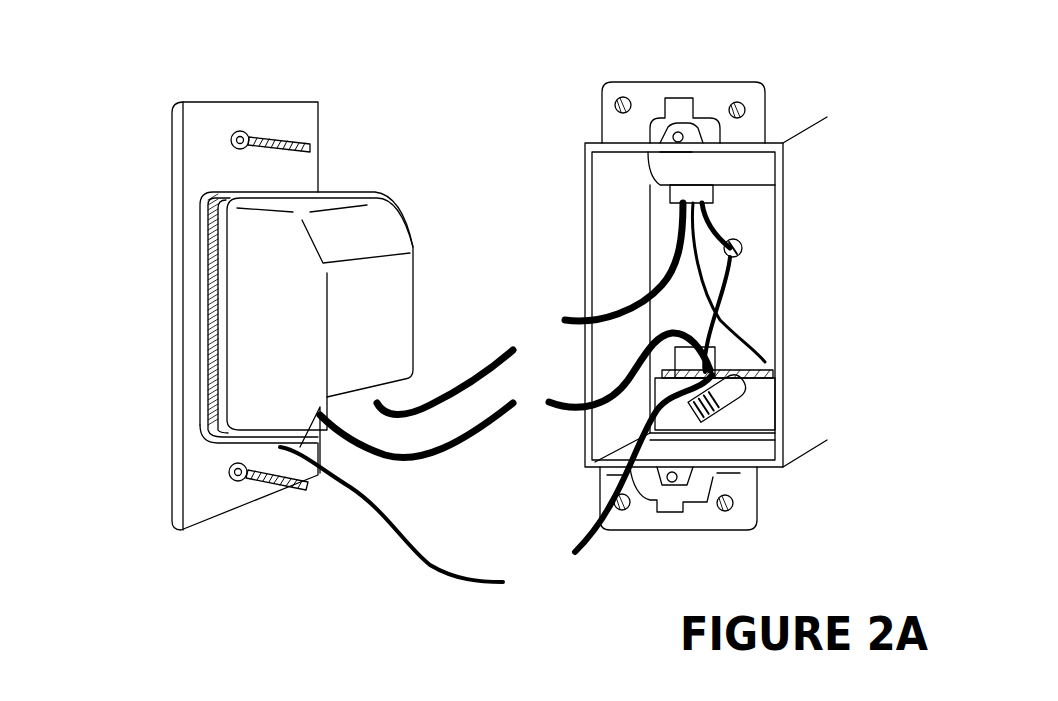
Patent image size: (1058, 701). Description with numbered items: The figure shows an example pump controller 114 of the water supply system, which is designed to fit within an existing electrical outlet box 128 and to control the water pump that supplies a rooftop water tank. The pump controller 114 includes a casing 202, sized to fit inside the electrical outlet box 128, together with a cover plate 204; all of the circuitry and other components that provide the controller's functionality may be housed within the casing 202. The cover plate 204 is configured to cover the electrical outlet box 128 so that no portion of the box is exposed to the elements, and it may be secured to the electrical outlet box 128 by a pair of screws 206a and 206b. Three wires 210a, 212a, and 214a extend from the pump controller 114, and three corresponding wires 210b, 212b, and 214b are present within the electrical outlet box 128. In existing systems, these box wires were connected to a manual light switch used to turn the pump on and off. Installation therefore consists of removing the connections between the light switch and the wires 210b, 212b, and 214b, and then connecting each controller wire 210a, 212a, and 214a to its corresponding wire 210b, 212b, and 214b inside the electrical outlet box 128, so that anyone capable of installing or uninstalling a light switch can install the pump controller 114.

The pump controller 114 is at (160, 277).
The casing 202 is at (368, 239).
The cover plate 204 is at (207, 135).
The screw 206a is at (277, 142).
The screw 206b is at (258, 488).
The wire 210a is at (477, 378).
The wire 210b is at (612, 302).
The wire 212a is at (467, 440).
The wire 212b is at (545, 407).
The wire 214a is at (427, 563).
The wire 214b is at (593, 538).
The electrical outlet box 128 is at (783, 297).